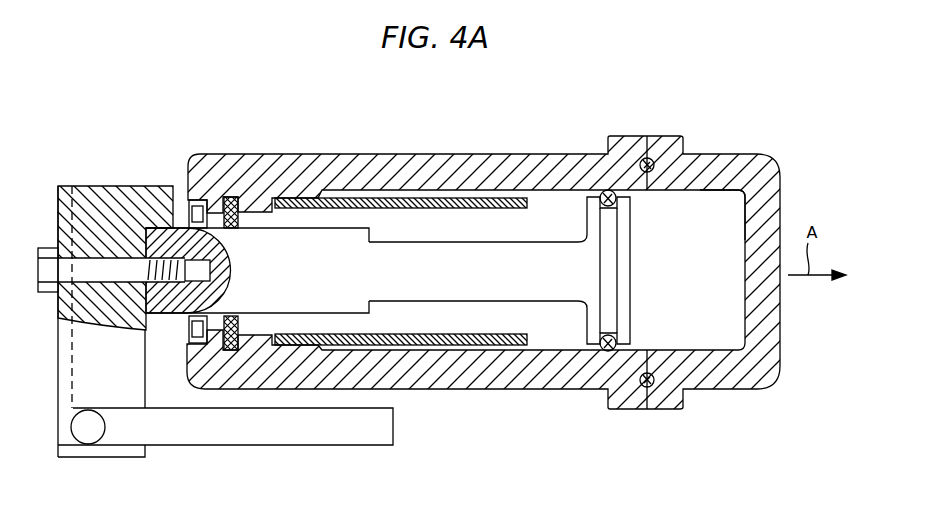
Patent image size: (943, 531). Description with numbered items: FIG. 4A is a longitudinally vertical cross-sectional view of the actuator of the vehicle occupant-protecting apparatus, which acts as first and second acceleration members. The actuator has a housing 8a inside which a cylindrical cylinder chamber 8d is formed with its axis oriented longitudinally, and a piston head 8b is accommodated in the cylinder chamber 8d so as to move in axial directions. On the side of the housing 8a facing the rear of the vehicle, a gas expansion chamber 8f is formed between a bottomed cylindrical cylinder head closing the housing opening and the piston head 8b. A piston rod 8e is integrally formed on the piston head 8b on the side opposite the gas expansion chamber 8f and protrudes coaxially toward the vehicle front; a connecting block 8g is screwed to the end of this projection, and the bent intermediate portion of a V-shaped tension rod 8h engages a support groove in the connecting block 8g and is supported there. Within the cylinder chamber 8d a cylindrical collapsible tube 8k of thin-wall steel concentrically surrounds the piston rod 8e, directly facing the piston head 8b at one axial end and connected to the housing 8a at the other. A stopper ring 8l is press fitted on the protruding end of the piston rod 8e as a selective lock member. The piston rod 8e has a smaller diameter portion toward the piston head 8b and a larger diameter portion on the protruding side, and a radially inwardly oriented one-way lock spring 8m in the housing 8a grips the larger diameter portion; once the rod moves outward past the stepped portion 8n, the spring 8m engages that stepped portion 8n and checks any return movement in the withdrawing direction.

The housing 8a is at (362, 154).
The piston head 8b is at (632, 222).
The cylinder chamber 8d is at (567, 198).
The piston rod 8e is at (495, 258).
The gas expansion chamber 8f is at (717, 203).
The connecting block 8g is at (108, 186).
The tension rod 8h is at (290, 446).
The cylindrical collapsible tube 8k is at (433, 200).
The stopper ring 8l is at (202, 200).
The one-way lock spring 8m is at (237, 197).
The stepped portion 8n is at (371, 313).